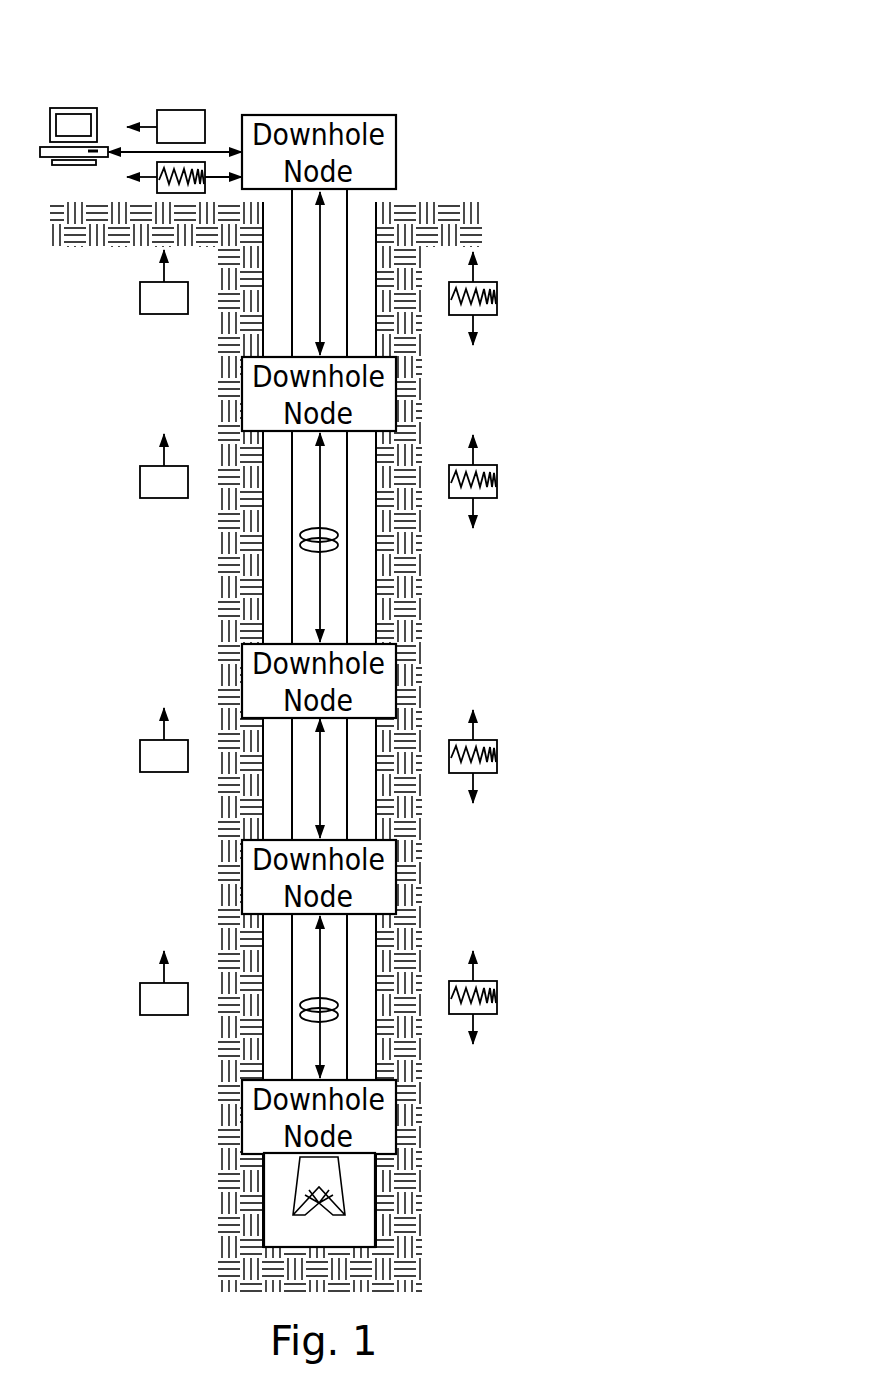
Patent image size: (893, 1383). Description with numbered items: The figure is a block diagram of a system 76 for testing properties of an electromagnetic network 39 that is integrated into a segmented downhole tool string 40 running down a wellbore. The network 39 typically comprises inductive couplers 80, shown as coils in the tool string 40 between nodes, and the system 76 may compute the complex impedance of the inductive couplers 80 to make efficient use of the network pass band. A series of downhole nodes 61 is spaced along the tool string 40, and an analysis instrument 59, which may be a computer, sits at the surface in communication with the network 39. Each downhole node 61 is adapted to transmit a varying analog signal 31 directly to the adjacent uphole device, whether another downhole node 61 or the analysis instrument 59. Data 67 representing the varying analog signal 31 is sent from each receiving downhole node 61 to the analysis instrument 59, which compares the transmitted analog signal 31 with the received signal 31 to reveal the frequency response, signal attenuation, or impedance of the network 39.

The system 76 is at (368, 60).
The downhole node 61 is at (362, 130).
The analysis instrument 59 is at (72, 123).
The data 67 is at (181, 110).
The electromagnetic network 39 is at (212, 147).
The varying analog signal 31 is at (157, 190).
The segmented downhole tool string 40 is at (307, 292).
The inductive coupler 80 is at (343, 543).